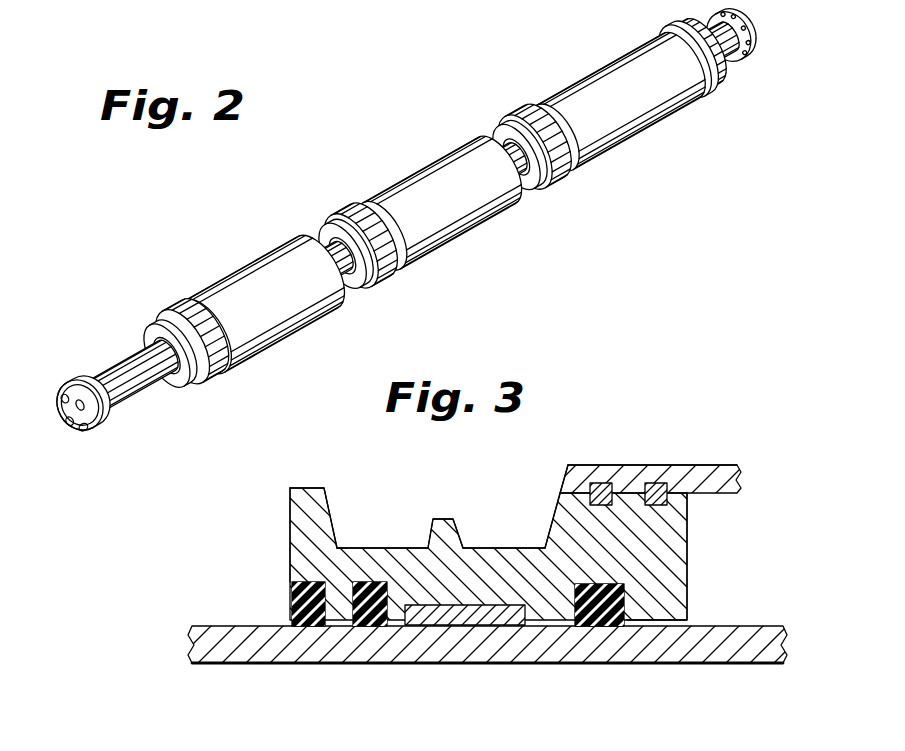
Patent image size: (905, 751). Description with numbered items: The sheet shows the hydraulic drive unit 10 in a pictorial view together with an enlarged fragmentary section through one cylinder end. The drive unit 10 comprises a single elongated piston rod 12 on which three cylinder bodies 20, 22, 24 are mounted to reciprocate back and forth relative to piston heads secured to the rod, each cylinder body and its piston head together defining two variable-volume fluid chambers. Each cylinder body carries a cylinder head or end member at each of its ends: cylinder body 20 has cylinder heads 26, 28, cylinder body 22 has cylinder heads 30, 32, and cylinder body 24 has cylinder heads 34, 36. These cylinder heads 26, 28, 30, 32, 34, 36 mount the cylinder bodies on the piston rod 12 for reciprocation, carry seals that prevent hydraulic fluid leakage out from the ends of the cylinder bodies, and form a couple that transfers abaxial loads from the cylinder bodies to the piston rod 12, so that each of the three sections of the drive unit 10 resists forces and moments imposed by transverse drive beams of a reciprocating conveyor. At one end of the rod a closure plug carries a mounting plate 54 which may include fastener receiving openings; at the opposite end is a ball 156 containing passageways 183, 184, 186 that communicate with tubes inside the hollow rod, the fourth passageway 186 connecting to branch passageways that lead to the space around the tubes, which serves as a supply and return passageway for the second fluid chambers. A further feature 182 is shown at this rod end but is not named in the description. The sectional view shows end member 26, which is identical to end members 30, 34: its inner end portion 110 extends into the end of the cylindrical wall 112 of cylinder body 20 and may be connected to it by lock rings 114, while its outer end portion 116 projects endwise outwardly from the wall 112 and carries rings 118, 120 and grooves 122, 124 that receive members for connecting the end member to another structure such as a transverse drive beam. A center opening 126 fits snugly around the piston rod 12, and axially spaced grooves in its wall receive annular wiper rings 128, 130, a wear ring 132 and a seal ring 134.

In FIG. 2, the hydraulic drive unit 10 is at (272, 222).
In FIG. 2, the piston rod 12 is at (147, 387).
In FIG. 3, the piston rod 12 is at (227, 640).
In FIG. 2, the cylinder body 20 is at (302, 354).
In FIG. 3, the cylinder body 20 is at (695, 463).
In FIG. 2, the cylinder body 22 is at (484, 262).
In FIG. 2, the cylinder body 24 is at (655, 147).
In FIG. 2, the cylinder head 26 is at (167, 327).
In FIG. 3, the cylinder head 26 is at (490, 506).
In FIG. 2, the cylinder head 28 is at (340, 279).
In FIG. 2, the cylinder head 30 is at (343, 210).
In FIG. 2, the cylinder head 32 is at (512, 132).
In FIG. 2, the cylinder head 34 is at (542, 118).
In FIG. 2, the cylinder head 36 is at (673, 33).
In FIG. 2, the mounting plate 54 is at (754, 31).
In FIG. 3, the inner end portion 110 is at (673, 542).
In FIG. 3, the cylindrical wall 112 is at (723, 467).
In FIG. 3, the lock rings 114 is at (605, 483).
In FIG. 3, the outer end portion 116 is at (373, 547).
In FIG. 3, the ring 118 is at (290, 503).
In FIG. 3, the ring 120 is at (438, 519).
In FIG. 3, the groove 122 is at (340, 540).
In FIG. 3, the groove 124 is at (513, 533).
In FIG. 3, the center opening 126 is at (657, 626).
In FIG. 3, the annular wiper ring 128 is at (315, 627).
In FIG. 3, the annular wiper ring 130 is at (377, 627).
In FIG. 3, the wear ring 132 is at (465, 625).
In FIG. 3, the seal ring 134 is at (605, 615).
In FIG. 2, the ball 156 is at (110, 417).
In FIG. 2, the end cap 182 is at (85, 402).
In FIG. 2, the third passageway 183 is at (67, 397).
In FIG. 2, the passageway 184 is at (83, 433).
In FIG. 2, the fourth passageway 186 is at (68, 427).